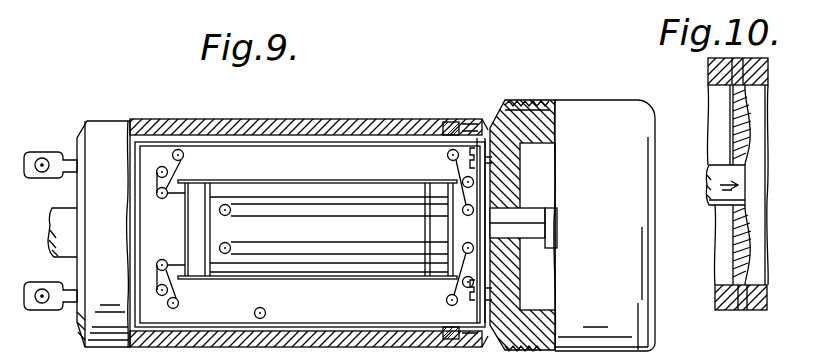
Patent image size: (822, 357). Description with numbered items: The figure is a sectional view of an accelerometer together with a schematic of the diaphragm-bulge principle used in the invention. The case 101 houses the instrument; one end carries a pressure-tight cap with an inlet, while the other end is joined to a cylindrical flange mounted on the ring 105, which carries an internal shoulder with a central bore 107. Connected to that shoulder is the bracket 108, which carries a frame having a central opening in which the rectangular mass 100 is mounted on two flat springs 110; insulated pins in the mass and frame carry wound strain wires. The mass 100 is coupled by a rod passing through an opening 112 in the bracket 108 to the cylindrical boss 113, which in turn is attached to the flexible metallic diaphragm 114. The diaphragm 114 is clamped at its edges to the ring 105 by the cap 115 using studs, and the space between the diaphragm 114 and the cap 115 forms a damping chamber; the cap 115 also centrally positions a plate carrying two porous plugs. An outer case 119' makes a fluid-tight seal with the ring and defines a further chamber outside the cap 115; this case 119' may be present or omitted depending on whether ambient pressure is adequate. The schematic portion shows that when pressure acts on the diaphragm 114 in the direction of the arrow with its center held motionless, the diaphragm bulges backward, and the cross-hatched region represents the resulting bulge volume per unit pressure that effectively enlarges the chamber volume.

In FIG. 9, the rectangular mass 100 is at (237, 229).
In FIG. 9, the case 101 is at (355, 120).
In FIG. 10, the ring 105 is at (708, 72).
In FIG. 9, the central bore 107 is at (508, 213).
In FIG. 9, the bracket 108 is at (458, 142).
In FIG. 9, the flat springs 110 is at (208, 180).
In FIG. 9, the opening 112 is at (442, 265).
In FIG. 9, the cylindrical boss 113 is at (557, 222).
In FIG. 10, the cylindrical boss 113 is at (705, 175).
In FIG. 10, the flexible metallic diaphragm 114 is at (732, 108).
In FIG. 10, the cap 115 is at (757, 312).
In FIG. 9, the case 119' is at (603, 208).